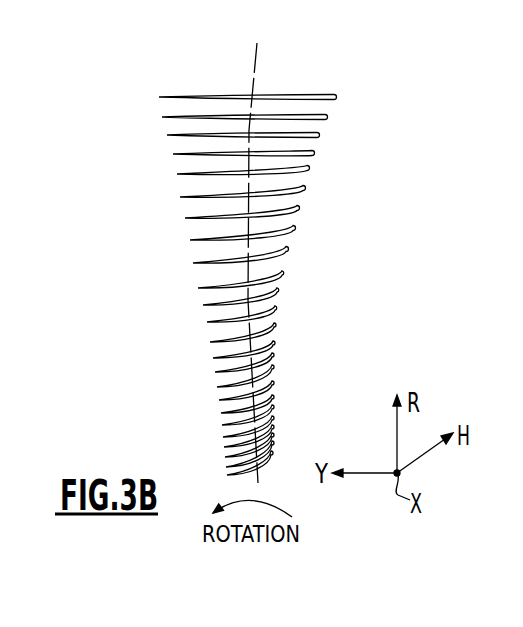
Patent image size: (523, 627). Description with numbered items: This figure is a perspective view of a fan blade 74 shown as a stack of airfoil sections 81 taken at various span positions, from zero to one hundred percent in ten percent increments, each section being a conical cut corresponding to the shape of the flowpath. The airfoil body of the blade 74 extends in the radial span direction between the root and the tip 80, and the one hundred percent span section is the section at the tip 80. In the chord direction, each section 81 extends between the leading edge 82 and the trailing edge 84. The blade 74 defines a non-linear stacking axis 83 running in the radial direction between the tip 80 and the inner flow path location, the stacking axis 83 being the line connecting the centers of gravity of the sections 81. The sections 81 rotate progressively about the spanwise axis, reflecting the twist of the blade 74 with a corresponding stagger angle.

The fan blade 74 is at (108, 80).
The tip 80 is at (175, 95).
The sections 81 is at (302, 117).
The leading edge 82 is at (177, 176).
The stacking axis 83 is at (258, 60).
The trailing edge 84 is at (309, 169).